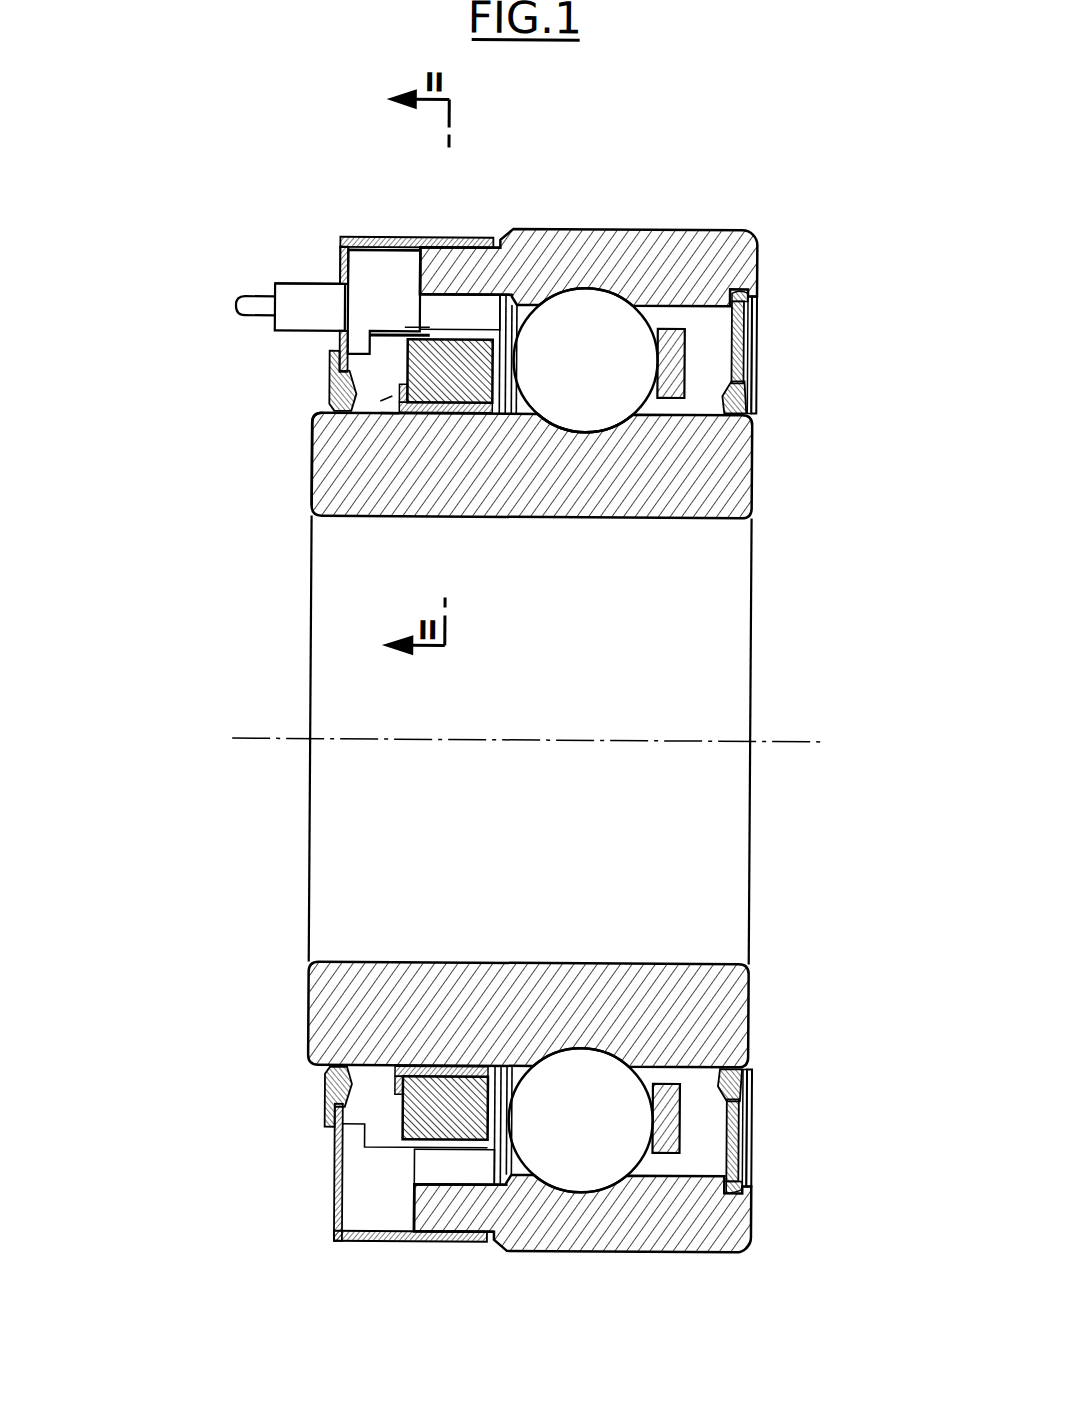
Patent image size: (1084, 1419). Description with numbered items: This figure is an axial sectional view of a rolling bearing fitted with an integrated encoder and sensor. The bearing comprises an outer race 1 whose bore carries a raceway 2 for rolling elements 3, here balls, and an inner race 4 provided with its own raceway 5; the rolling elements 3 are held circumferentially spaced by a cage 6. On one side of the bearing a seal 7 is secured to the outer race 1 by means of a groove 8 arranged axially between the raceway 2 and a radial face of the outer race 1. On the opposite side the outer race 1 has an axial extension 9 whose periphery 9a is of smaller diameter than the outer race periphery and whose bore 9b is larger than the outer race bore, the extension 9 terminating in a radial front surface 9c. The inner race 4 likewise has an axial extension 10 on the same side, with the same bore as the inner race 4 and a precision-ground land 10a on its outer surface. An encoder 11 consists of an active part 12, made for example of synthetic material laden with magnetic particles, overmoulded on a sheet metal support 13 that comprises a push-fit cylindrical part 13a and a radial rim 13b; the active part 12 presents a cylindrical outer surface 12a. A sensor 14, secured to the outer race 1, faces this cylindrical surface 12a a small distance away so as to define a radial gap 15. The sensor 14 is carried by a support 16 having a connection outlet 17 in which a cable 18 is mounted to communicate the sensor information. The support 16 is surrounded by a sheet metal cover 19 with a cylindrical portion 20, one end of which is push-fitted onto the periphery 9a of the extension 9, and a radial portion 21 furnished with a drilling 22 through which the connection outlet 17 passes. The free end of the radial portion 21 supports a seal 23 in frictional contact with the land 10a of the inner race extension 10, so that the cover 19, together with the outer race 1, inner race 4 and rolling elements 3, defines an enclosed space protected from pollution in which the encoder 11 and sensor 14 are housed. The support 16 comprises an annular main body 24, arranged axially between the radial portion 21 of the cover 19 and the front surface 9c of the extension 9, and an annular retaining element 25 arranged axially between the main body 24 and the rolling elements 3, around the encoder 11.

The outer race 1 is at (573, 343).
The raceway 2 is at (602, 390).
The rolling elements 3 is at (604, 430).
The inner race 4 is at (726, 310).
The raceway 5 is at (676, 342).
The cage 6 is at (703, 467).
The seal 7 is at (751, 335).
The groove 8 is at (748, 303).
The axial extension 9 is at (436, 268).
The periphery 9a is at (465, 303).
The bore 9b is at (482, 313).
The radial front surface 9c is at (410, 1212).
The axial extension 10 is at (335, 497).
The precision-ground land 10a is at (327, 467).
The encoder 11 is at (380, 402).
The active part 12 is at (467, 400).
The cylindrical outer surface 12a is at (503, 415).
The sheet metal support 13 is at (513, 412).
The push-fit cylindrical part 13a is at (428, 413).
The radial rim 13b is at (381, 414).
The sensor 14 is at (568, 255).
The radial gap 15 is at (370, 337).
The support 16 is at (383, 278).
The connection outlet 17 is at (302, 302).
The cable 18 is at (254, 302).
The cover 19 is at (360, 228).
The cylindrical portion 20 is at (384, 238).
The radial portion 21 is at (340, 277).
The drilling 22 is at (284, 283).
The seal 23 is at (331, 383).
The main body 24 is at (372, 1195).
The retaining element 25 is at (472, 1165).